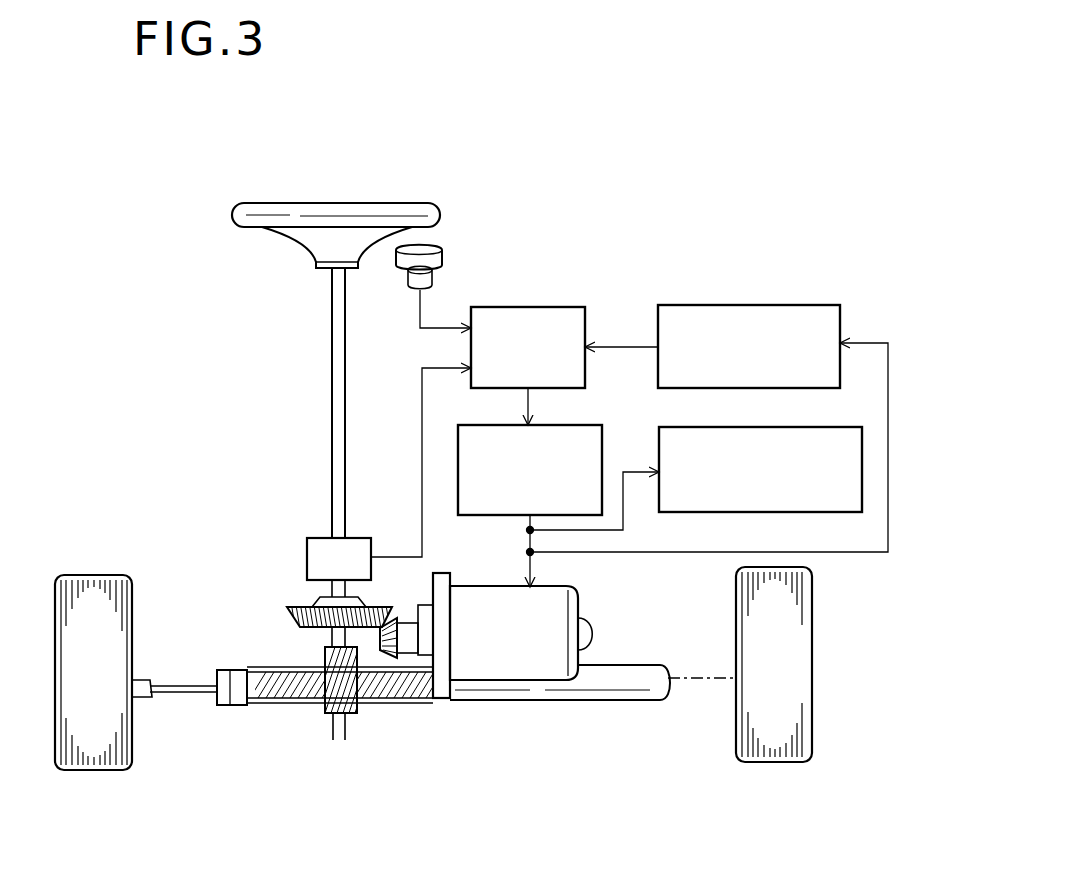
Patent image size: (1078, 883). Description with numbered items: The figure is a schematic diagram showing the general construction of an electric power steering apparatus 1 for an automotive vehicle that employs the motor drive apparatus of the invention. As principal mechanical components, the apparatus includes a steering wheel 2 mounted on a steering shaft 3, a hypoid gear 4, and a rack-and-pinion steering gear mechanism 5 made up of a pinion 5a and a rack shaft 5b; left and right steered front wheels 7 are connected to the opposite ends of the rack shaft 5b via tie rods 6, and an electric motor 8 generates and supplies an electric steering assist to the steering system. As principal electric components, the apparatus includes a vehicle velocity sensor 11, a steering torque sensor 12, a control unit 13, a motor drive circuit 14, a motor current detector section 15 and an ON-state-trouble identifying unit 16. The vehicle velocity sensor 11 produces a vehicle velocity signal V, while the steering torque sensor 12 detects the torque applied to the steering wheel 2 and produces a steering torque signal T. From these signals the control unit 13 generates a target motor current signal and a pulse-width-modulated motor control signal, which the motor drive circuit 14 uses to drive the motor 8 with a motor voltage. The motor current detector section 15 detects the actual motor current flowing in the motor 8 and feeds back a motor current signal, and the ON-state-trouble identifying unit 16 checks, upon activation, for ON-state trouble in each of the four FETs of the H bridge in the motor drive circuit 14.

The electric power steering apparatus 1 is at (349, 143).
The steering wheel 2 is at (388, 203).
The steering shaft 3 is at (332, 402).
The hypoid gear 4 is at (395, 700).
The rack-and-pinion steering gear mechanism 5 is at (312, 717).
The pinion 5a is at (357, 713).
The rack shaft 5b is at (612, 680).
The tie rod 6 is at (178, 695).
The steered front wheel 7 is at (95, 575).
The electric motor 8 is at (556, 598).
The vehicle velocity sensor 11 is at (430, 256).
The steering torque sensor 12 is at (307, 561).
The control unit 13 is at (548, 307).
The motor drive circuit 14 is at (573, 425).
The motor current detector section 15 is at (745, 305).
The ON-state-trouble identifying unit 16 is at (755, 427).